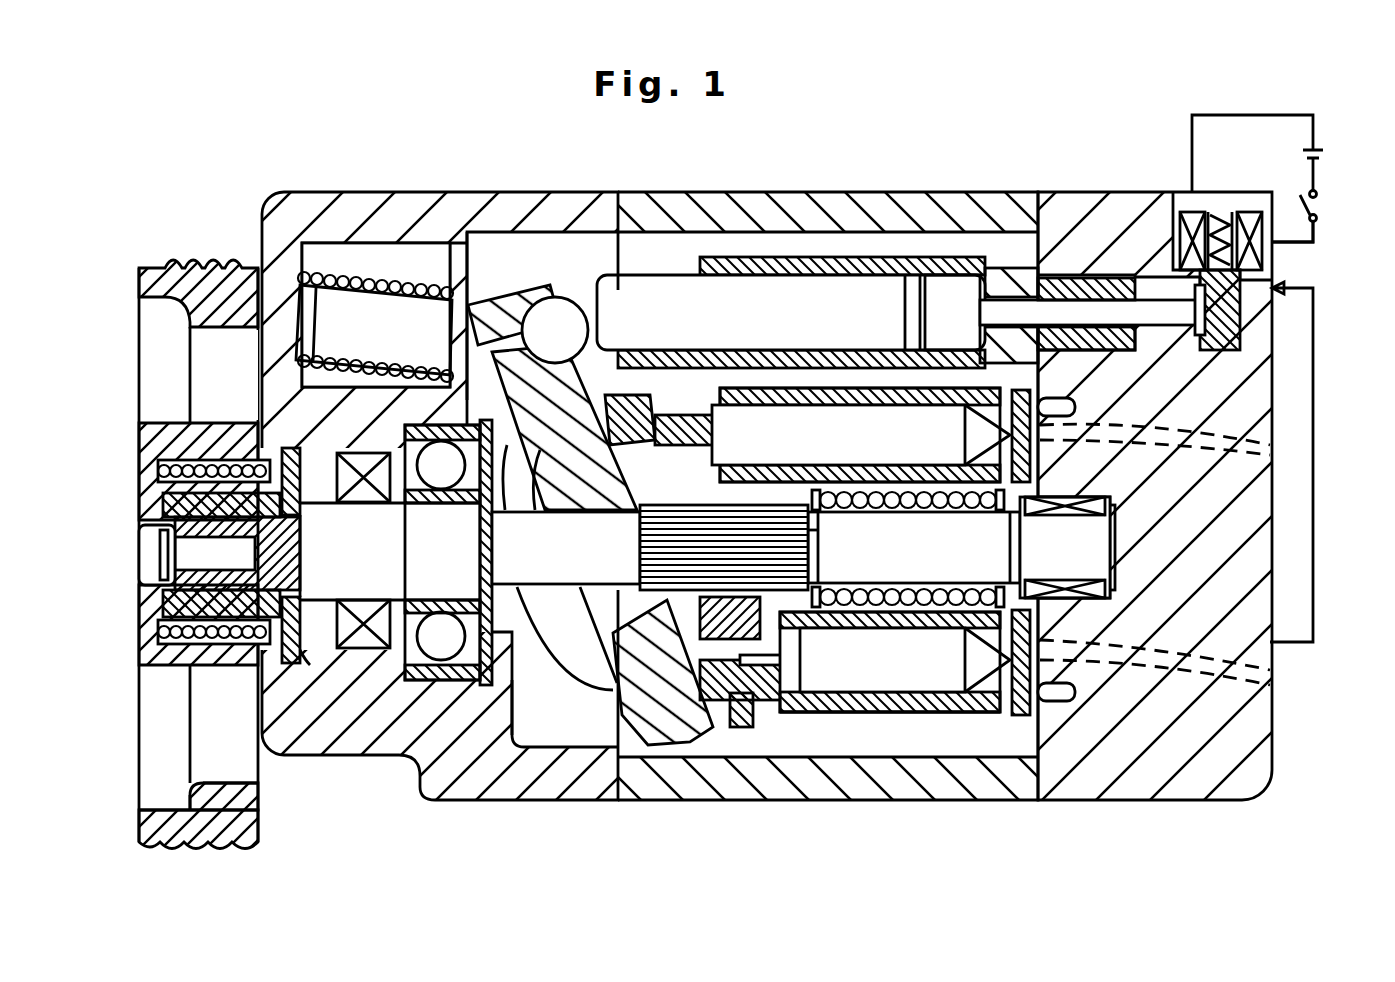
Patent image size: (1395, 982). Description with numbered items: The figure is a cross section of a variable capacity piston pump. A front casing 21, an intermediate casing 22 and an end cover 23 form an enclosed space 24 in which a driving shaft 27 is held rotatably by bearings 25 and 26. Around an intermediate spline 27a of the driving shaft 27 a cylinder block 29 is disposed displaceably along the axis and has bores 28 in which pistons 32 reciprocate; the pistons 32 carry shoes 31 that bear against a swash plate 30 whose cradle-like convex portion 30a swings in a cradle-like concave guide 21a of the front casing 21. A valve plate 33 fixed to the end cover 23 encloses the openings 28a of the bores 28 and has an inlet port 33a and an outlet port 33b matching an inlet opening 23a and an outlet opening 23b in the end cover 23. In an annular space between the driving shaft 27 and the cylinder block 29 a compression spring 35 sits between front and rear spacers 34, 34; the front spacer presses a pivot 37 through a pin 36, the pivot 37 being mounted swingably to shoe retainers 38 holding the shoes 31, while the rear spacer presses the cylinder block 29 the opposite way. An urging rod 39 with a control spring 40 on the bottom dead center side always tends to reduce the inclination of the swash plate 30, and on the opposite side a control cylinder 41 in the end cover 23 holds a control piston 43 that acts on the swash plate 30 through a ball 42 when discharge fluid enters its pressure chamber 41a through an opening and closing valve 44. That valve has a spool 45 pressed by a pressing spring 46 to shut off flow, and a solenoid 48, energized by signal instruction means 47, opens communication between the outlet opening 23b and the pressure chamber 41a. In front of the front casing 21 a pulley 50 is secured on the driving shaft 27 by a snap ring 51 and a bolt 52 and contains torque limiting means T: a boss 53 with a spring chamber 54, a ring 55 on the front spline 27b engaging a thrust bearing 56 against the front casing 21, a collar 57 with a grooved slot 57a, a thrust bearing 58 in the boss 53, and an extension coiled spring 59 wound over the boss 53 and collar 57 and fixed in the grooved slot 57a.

The front casing 21 is at (457, 192).
The cradle-like concave guide 21a is at (525, 660).
The intermediate casing 22 is at (822, 192).
The end cover 23 is at (1118, 208).
The inlet opening 23a is at (1272, 430).
The outlet opening 23b is at (1272, 695).
The enclosed space 24 is at (542, 316).
The bearing 25 is at (440, 478).
The bearing 26 is at (1072, 512).
The driving shaft 27 is at (707, 552).
The intermediate spline 27a is at (640, 548).
The front spline 27b is at (292, 595).
The bores 28 is at (838, 545).
The openings of the bores 28a is at (968, 445).
The cylinder block 29 is at (880, 714).
The swash plate 30 is at (500, 320).
The cradle-like convex portion 30a is at (570, 647).
The shoes 31 is at (612, 400).
The pistons 32 is at (703, 418).
The valve plate 33 is at (1015, 716).
The inlet port 33a is at (1272, 455).
The outlet port 33b is at (1272, 688).
The spacers 34 is at (909, 548).
The compression spring 35 is at (905, 512).
The pin 36 is at (822, 540).
The pivot 37 is at (656, 672).
The shoe retainers 38 is at (752, 722).
The urging rod 39 is at (405, 305).
The control spring 40 is at (374, 312).
The control cylinder 41 is at (1005, 290).
The pressure chamber 41a is at (946, 312).
The ball 42 is at (555, 330).
The control piston 43 is at (791, 312).
The opening and closing valve 44 is at (1263, 168).
The spool 45 is at (1240, 336).
The pressing spring 46 is at (1220, 228).
The signal instruction means 47 is at (1318, 206).
The solenoid 48 is at (1258, 258).
The pulley 50 is at (210, 268).
The snap ring 51 is at (142, 556).
The bolt 52 is at (164, 590).
The boss 53 is at (165, 632).
The spring chamber 54 is at (172, 462).
The ring 55 is at (335, 522).
The thrust bearing 56 is at (312, 655).
The collar 57 is at (292, 650).
The grooved slot 57a is at (165, 480).
The thrust bearing 58 is at (165, 500).
The coiled spring 59 is at (210, 648).
The torque limiting means T is at (218, 400).